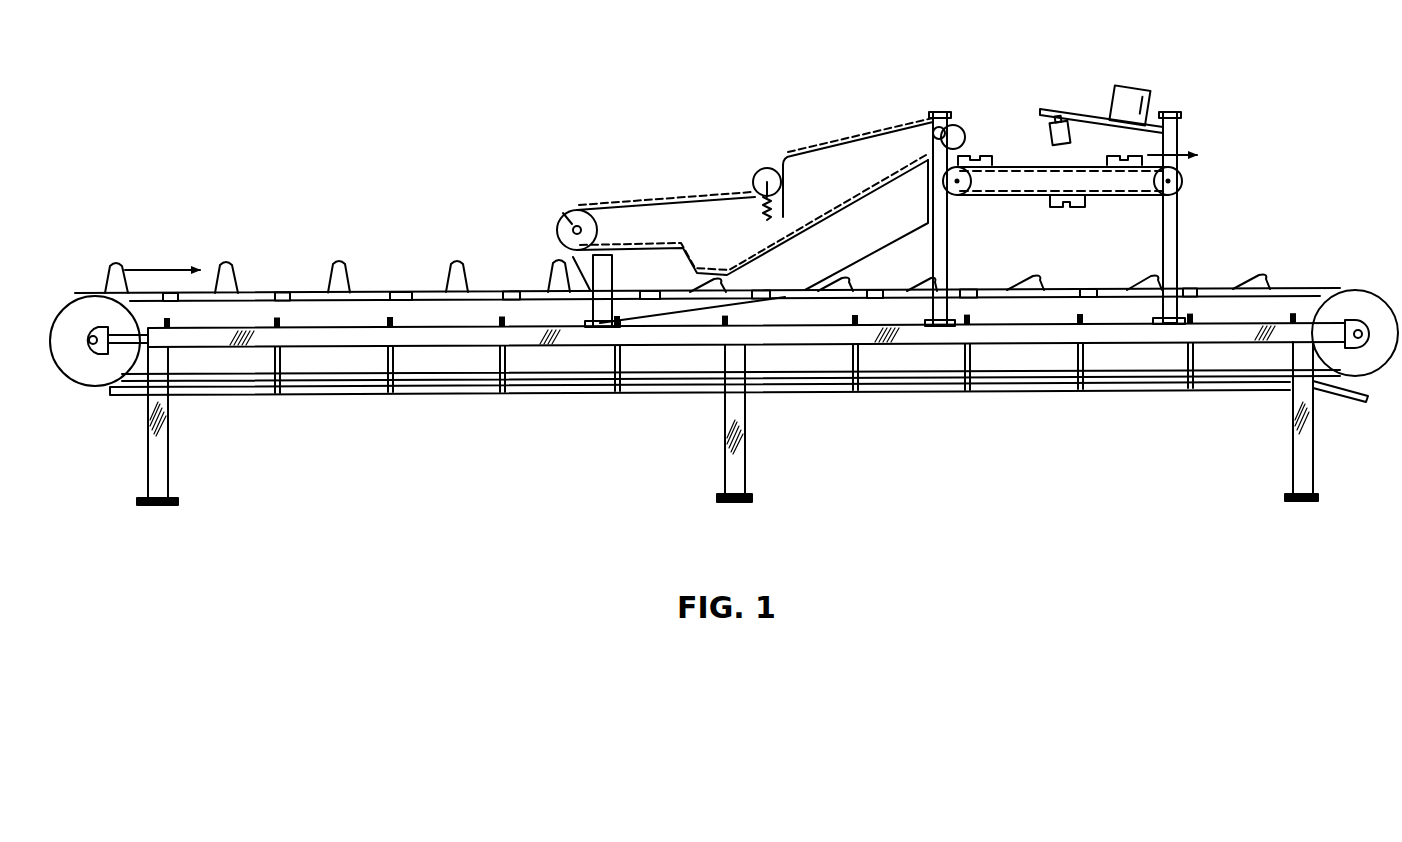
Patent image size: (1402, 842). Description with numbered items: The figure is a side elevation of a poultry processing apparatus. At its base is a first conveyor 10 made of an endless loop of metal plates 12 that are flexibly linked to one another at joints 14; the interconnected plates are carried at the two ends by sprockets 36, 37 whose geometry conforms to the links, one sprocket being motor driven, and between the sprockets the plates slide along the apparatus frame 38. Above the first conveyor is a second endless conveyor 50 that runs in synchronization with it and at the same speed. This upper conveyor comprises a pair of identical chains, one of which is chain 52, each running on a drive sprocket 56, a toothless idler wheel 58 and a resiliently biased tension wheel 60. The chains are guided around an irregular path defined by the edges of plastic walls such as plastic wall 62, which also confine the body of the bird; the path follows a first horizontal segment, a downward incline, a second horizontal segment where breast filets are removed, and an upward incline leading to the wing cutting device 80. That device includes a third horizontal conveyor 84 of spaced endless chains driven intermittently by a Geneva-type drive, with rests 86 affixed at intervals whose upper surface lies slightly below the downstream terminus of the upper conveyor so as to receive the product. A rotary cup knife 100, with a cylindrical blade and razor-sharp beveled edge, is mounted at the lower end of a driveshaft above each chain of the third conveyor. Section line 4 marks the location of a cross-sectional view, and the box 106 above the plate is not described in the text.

The first conveyor 10 is at (381, 278).
The metal plates 12 is at (298, 294).
The joints 14 is at (400, 292).
The sprocket 36 is at (82, 296).
The sprocket 37 is at (1364, 290).
The apparatus frame 38 is at (748, 465).
The section line 4 is at (783, 262).
The second endless conveyor 50 is at (743, 195).
The chain 52 is at (640, 203).
The drive sprocket 56 is at (953, 126).
The toothless idler wheel 58 is at (569, 222).
The resiliently biased tension wheel 60 is at (757, 172).
The plastic wall 62 is at (732, 251).
The wing cutting device 80 is at (1095, 179).
The third horizontal conveyor 84 is at (1130, 199).
The rests 86 is at (1053, 208).
The rotary cup knife 100 is at (1048, 139).
The light source housing 106 is at (1150, 98).